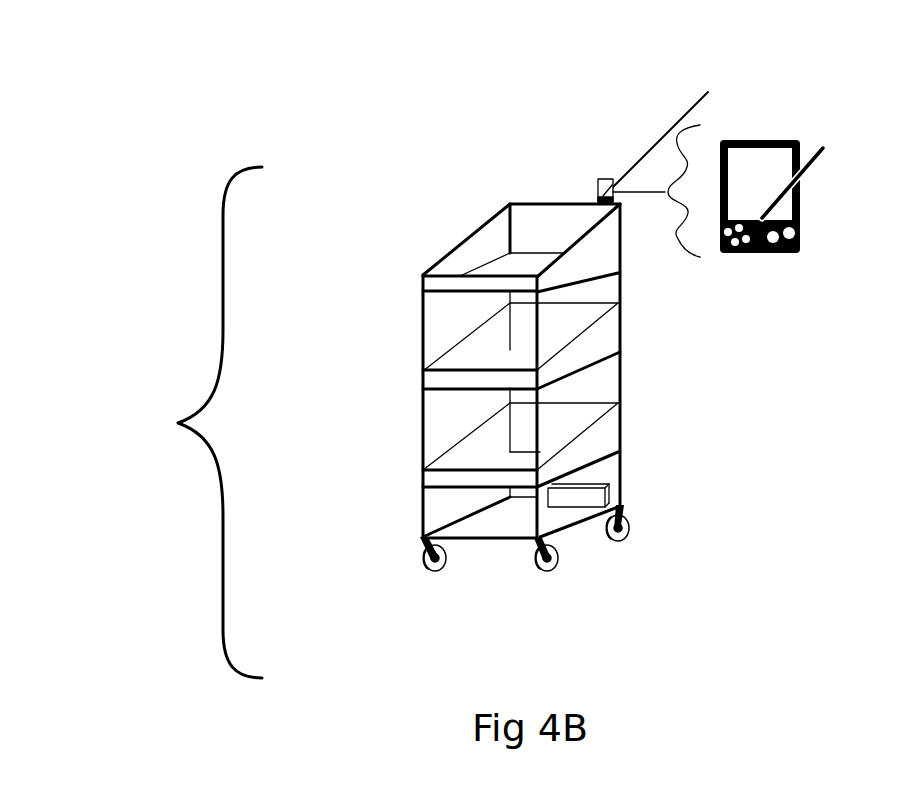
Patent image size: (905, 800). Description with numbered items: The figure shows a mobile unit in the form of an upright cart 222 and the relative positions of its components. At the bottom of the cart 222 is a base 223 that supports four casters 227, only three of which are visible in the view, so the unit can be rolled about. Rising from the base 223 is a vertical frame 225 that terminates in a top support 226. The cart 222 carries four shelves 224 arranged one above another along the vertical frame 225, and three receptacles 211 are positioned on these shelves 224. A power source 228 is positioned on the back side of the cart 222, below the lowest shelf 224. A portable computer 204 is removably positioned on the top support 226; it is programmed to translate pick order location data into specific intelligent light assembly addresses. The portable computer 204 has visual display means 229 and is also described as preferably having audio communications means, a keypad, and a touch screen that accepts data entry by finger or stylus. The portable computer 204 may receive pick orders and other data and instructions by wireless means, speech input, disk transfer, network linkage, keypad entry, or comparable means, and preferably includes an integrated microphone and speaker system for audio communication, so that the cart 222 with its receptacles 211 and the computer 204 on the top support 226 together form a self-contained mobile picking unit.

The upright cart 222 is at (168, 422).
The vertical frame 225 is at (622, 336).
The top support 226 is at (510, 204).
The receptacle 211 is at (462, 242).
The shelf 224 is at (423, 292).
The power source 228 is at (612, 483).
The base 223 is at (622, 500).
The caster 227 is at (618, 541).
The portable computer 204 is at (757, 139).
The visual display means 229 is at (765, 160).